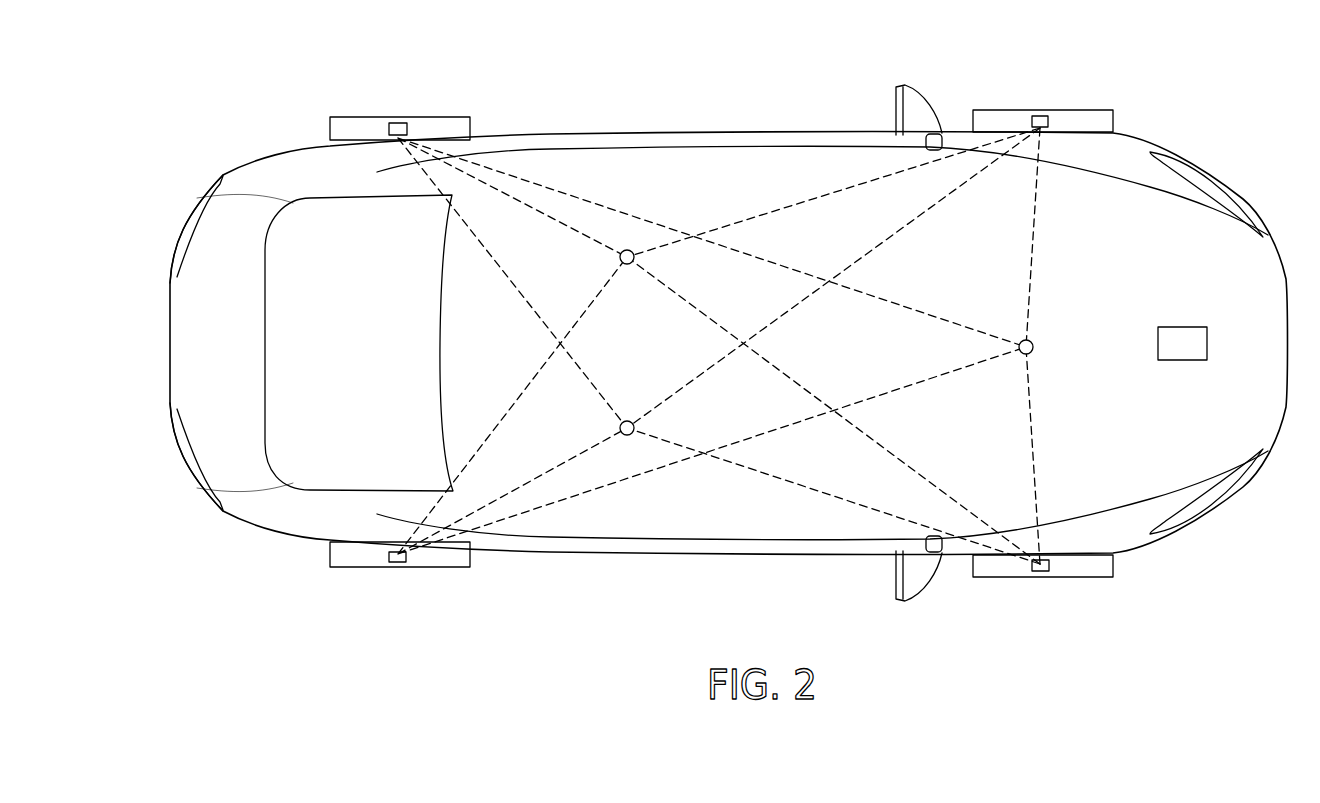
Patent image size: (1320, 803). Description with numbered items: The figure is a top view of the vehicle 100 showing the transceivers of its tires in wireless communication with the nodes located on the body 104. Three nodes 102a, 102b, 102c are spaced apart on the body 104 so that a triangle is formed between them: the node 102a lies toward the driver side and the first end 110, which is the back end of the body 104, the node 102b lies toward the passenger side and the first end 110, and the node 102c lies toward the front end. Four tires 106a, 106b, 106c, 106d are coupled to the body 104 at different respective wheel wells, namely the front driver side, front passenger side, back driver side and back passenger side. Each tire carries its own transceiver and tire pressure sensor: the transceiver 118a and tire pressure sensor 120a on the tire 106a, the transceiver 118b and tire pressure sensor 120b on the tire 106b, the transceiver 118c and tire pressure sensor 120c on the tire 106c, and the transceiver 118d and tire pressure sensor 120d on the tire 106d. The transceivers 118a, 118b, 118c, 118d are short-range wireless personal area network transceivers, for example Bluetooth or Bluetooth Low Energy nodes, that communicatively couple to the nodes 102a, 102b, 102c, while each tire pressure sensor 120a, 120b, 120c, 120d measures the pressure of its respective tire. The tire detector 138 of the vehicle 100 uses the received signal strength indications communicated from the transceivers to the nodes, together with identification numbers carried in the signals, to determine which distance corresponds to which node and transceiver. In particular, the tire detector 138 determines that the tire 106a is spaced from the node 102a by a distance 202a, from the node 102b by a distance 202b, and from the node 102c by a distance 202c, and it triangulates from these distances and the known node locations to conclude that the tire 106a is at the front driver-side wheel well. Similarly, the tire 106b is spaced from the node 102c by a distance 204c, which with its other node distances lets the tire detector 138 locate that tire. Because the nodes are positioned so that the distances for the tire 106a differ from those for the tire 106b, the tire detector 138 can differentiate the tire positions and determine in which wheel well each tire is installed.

The vehicle 100 is at (232, 109).
The body 104 is at (673, 518).
The first end 110 is at (170, 342).
The tire 106a is at (998, 110).
The tire 106b is at (1000, 577).
The tire 106c is at (357, 117).
The tire 106d is at (357, 568).
The transceiver 118a is at (1038, 116).
The transceiver 118b is at (1038, 575).
The transceiver 118c is at (395, 123).
The transceiver 118d is at (395, 563).
The tire pressure sensor 120a is at (1067, 90).
The tire pressure sensor 120b is at (1067, 597).
The tire pressure sensor 120c is at (422, 98).
The tire pressure sensor 120d is at (423, 586).
The node 102a is at (627, 265).
The node 102b is at (627, 420).
The node 102c is at (1034, 348).
The tire detector 138 is at (1195, 354).
The distance 202a is at (810, 197).
The distance 202b is at (903, 227).
The distance 202c is at (1030, 254).
The distance 204c is at (1030, 433).